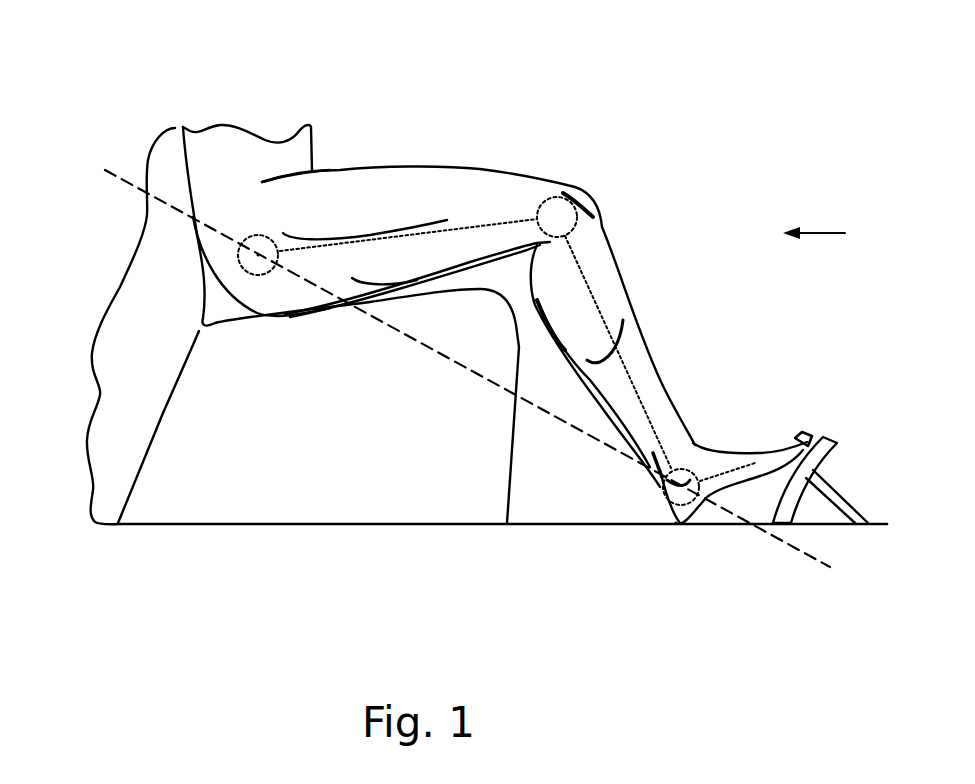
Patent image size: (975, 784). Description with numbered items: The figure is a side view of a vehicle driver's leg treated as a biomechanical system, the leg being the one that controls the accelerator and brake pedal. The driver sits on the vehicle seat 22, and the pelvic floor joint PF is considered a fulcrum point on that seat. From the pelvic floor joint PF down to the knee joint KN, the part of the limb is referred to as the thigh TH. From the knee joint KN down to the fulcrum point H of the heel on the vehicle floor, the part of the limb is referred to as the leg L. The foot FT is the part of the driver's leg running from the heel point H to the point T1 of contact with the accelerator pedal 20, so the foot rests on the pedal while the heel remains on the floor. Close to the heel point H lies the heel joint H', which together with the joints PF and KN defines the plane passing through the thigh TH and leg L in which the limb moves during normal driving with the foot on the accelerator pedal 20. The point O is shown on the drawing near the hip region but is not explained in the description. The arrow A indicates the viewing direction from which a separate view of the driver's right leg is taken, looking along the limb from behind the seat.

The vehicle seat 22 is at (297, 452).
The accelerator pedal 20 is at (467, 401).
The pelvic floor joint PF is at (257, 245).
The hip point O is at (257, 254).
The thigh TH is at (410, 193).
The knee joint KN is at (562, 212).
The leg L is at (630, 290).
The foot FT is at (733, 480).
The point of contact with the accelerator pedal T1 is at (810, 437).
The heel joint H' is at (615, 550).
The fulcrum point of the heel H is at (643, 577).
The arrow A is at (832, 233).